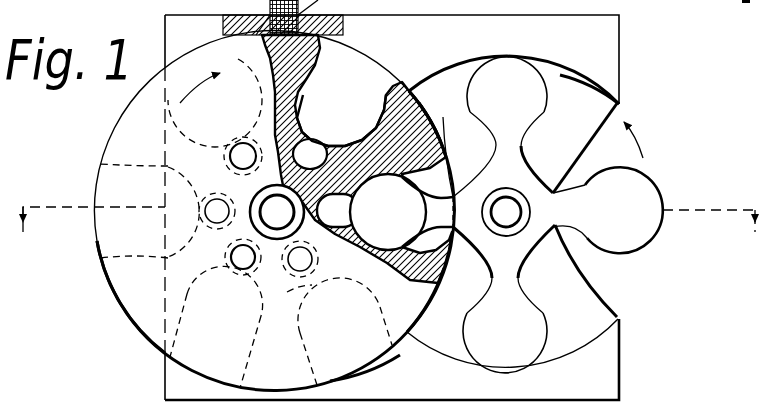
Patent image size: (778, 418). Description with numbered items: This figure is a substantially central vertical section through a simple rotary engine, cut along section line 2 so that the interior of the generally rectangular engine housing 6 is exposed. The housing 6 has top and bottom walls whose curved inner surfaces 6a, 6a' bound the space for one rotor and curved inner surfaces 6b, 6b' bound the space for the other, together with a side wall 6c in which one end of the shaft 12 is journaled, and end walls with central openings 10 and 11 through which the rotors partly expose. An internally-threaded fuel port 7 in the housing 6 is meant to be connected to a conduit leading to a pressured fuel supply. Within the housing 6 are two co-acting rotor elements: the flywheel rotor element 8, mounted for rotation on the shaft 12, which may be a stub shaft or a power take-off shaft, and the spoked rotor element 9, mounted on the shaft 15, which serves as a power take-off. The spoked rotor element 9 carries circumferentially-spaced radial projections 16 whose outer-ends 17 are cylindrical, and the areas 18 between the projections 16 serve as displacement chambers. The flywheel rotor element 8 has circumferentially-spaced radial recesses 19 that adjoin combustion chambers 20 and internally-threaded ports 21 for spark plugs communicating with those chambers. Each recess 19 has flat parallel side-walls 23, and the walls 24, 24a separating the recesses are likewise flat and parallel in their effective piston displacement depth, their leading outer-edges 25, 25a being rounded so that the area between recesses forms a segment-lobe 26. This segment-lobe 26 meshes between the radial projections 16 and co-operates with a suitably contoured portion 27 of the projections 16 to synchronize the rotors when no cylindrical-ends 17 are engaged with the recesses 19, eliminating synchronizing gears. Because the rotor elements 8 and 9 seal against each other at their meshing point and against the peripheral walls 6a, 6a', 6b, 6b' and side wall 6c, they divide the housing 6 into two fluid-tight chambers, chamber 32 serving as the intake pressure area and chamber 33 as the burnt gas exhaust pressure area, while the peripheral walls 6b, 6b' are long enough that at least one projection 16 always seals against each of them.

The section line 2- 2 is at (387, 207).
The engine housing 6 is at (163, 383).
The curved inner surface of top wall 6a is at (251, 136).
The curved inner surface of bottom wall 6a' is at (365, 374).
The curved inner surface of top wall 6b is at (514, 80).
The curved inner surface of bottom wall 6b' is at (512, 339).
The side wall 6c is at (574, 127).
The fuel port 7 is at (302, 4).
The flywheel rotor element 8 is at (133, 318).
The spoked rotor element 9 is at (537, 192).
The end wall opening 10 is at (574, 276).
The end wall opening 11 is at (381, 115).
The shaft 12 is at (277, 212).
The shaft 15 is at (506, 197).
The radial projections 16 is at (450, 221).
The cylindrical outer-ends 17 is at (397, 222).
The displacement chambers 18 is at (499, 191).
The radial recesses 19 is at (163, 347).
The combustion chambers 20 is at (312, 224).
The internally-threaded ports 21 is at (230, 163).
The flat-parallel side-wall 23 is at (351, 103).
The separating wall 24 is at (303, 84).
The separating wall 24a is at (158, 169).
The leading outer-edge 25 is at (110, 261).
The leading outer-edge 25a is at (115, 163).
The segment-lobe 26 is at (133, 131).
The contoured portion 27 is at (497, 144).
The intake pressure chamber 32 is at (433, 112).
The exhaust pressure chamber 33 is at (428, 300).